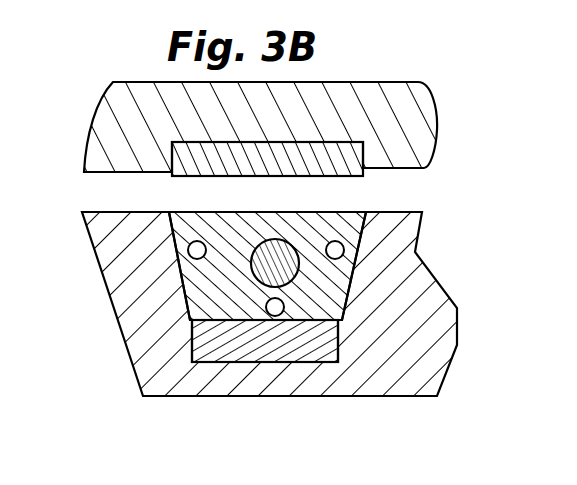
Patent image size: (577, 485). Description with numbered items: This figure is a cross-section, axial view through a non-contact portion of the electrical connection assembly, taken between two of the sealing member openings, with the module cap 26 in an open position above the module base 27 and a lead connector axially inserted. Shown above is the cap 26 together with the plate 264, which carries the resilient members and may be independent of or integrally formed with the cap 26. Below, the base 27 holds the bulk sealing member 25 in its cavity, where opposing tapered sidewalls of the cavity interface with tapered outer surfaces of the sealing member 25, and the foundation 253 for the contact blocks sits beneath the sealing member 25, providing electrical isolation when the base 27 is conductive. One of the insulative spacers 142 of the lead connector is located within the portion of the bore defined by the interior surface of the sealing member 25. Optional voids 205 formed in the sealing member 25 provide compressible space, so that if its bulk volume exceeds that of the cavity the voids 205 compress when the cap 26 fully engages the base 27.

The module cap 26 is at (118, 110).
The plate 264 is at (180, 158).
The module base 27 is at (140, 350).
The bulk sealing member 25 is at (318, 222).
The foundation 253 is at (210, 346).
The insulative spacer 142 is at (350, 290).
The voids 205 is at (190, 251).